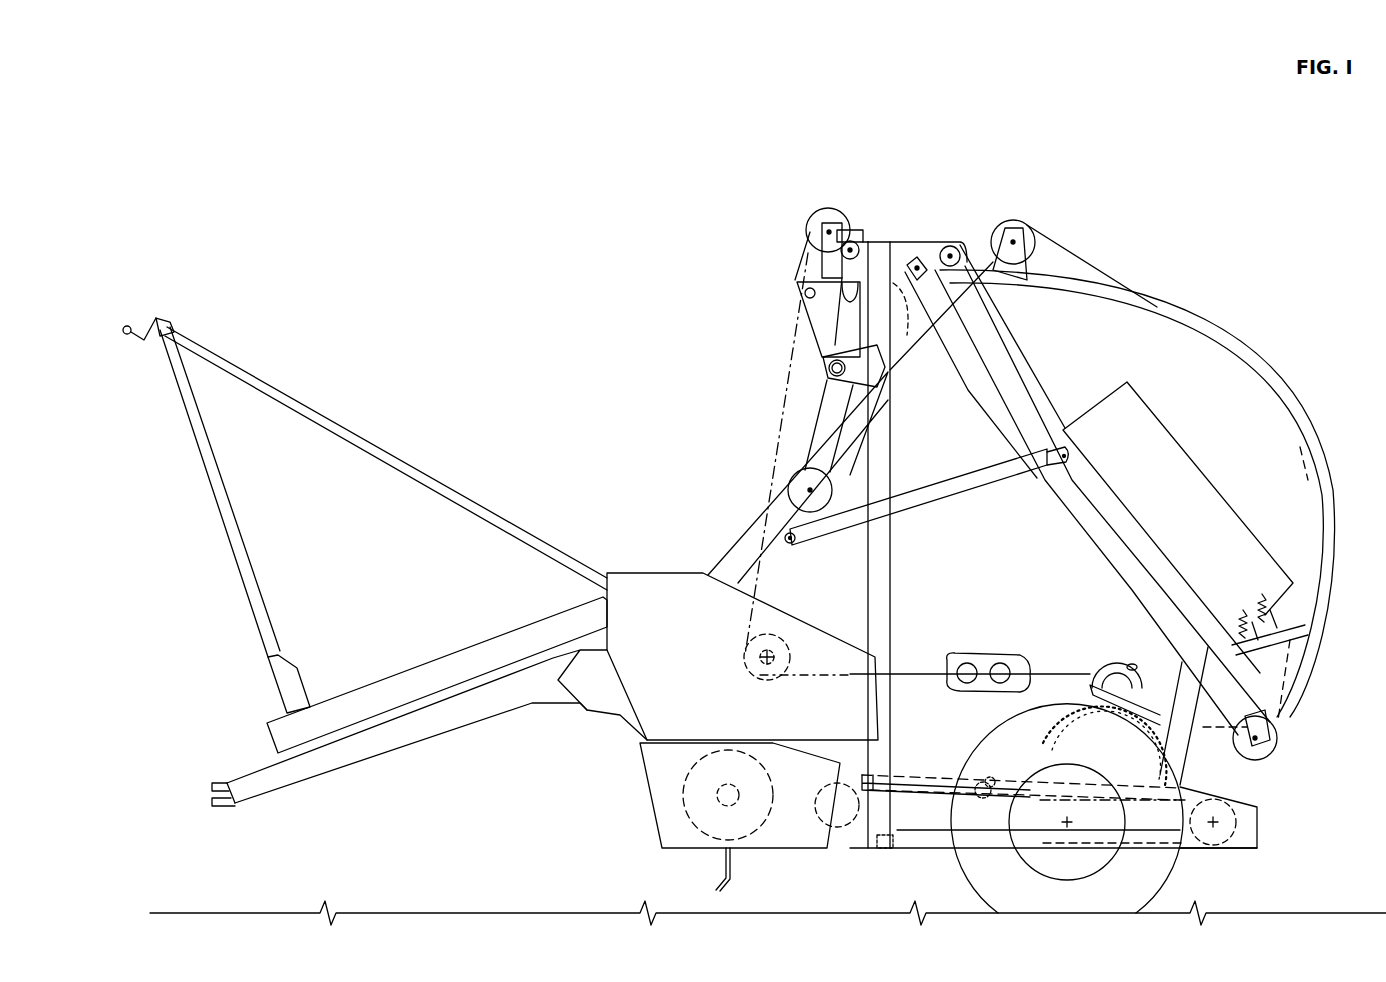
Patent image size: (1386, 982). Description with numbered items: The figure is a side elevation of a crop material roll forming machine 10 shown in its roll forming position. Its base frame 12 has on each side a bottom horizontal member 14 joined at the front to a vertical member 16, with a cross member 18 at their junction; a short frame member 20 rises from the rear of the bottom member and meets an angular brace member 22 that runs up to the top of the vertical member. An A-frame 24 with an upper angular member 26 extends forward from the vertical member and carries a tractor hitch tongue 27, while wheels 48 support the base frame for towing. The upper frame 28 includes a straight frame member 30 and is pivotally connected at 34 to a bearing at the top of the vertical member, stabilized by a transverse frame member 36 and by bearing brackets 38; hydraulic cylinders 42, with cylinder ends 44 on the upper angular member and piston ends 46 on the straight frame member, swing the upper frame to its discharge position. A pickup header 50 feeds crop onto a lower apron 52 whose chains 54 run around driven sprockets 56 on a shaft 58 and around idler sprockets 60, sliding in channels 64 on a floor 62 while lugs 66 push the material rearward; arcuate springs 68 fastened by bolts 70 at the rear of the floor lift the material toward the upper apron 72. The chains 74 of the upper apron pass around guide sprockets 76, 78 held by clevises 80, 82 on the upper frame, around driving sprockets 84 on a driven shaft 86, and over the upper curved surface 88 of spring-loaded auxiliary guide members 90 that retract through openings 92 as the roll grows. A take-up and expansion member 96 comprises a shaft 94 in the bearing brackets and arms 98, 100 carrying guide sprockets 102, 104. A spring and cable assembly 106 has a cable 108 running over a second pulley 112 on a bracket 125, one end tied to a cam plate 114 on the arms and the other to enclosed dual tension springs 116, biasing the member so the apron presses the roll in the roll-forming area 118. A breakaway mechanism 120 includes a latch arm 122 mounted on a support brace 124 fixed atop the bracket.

The crop roll forming machine 10 is at (1289, 282).
The base frame 12 is at (896, 862).
The bottom horizontal member 14 is at (925, 848).
The vertical member 16 is at (890, 558).
The cross member 18 is at (880, 848).
The short frame member 20 is at (1190, 690).
The angular brace member 22 is at (1097, 545).
The A-frame 24 is at (711, 563).
The upper angular member 26 is at (752, 547).
The tractor hitch tongue 27 is at (392, 760).
The upper frame 28 is at (1197, 303).
The straight frame member 30 is at (1103, 483).
The pivotal connection 34 is at (978, 333).
The transverse frame member 36 is at (965, 375).
The bearing brackets 38 is at (907, 378).
The hydraulic cylinders 42 is at (950, 497).
The cylinder ends 44 is at (793, 541).
The piston ends 46 is at (1050, 468).
The wheels 48 is at (1170, 865).
The pickup header 50 is at (650, 840).
The lower apron 52 is at (815, 857).
The chains 54 is at (900, 828).
The driven sprockets 56 is at (826, 802).
The shaft 58 is at (830, 795).
The idler sprockets 60 is at (1240, 812).
The floor 62 is at (974, 803).
The channels 64 is at (933, 750).
The lugs 66 is at (1010, 758).
The springs 68 is at (1147, 826).
The bolts 70 is at (1075, 830).
The upper apron 72 is at (979, 638).
The chains 74 is at (1010, 662).
The guide sprocket 76 is at (1270, 740).
The guide sprocket 78 is at (1013, 222).
The clevis 80 is at (1250, 728).
The clevis 82 is at (1020, 262).
The driving sprockets 84 is at (785, 657).
The driven shaft 86 is at (757, 657).
The upper curved surface 88 is at (1112, 672).
The auxiliary guide members 90 is at (1141, 652).
The openings 92 is at (1136, 666).
The shaft 94 is at (838, 360).
The take-up and expansion member 96 is at (794, 377).
The arm 98 is at (810, 257).
The arm 100 is at (812, 443).
The guide sprocket 102 is at (812, 215).
The guide sprocket 104 is at (787, 492).
The spring and cable assembly 106 is at (1183, 426).
The cable 108 is at (1078, 324).
The second pulley 112 is at (867, 242).
The cam plate 114 is at (803, 302).
The enclosed dual tension springs 116 is at (1240, 625).
The roll-forming area 118 is at (1032, 711).
The breakaway mechanism 120 is at (876, 204).
The latch arm 122 is at (846, 228).
The support brace 124 is at (876, 222).
The bracket 125 is at (893, 252).